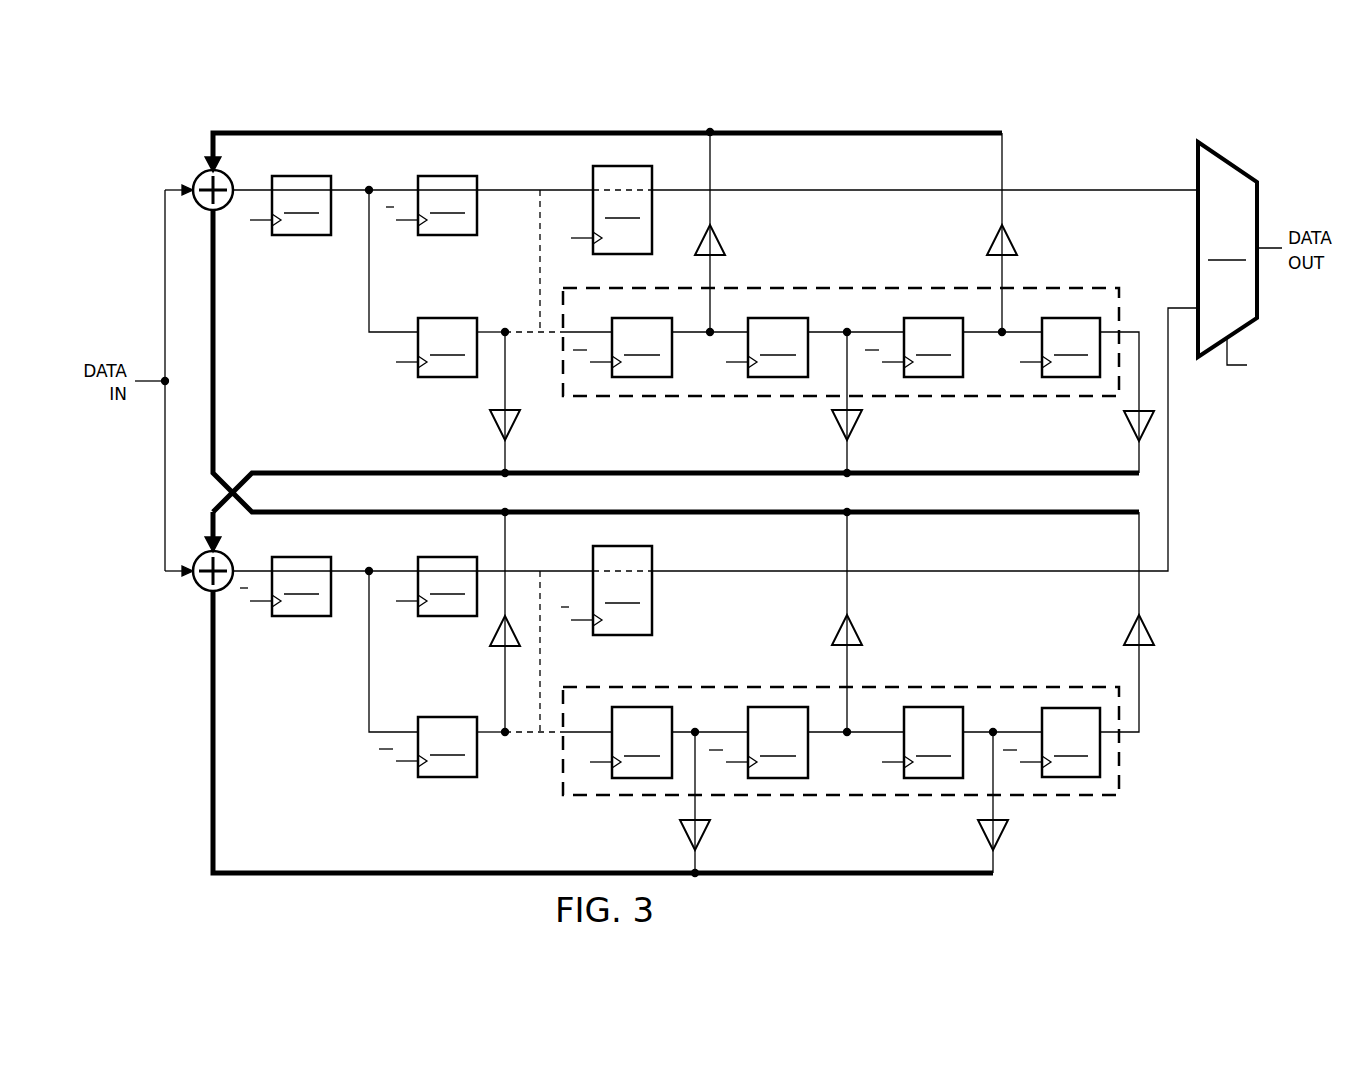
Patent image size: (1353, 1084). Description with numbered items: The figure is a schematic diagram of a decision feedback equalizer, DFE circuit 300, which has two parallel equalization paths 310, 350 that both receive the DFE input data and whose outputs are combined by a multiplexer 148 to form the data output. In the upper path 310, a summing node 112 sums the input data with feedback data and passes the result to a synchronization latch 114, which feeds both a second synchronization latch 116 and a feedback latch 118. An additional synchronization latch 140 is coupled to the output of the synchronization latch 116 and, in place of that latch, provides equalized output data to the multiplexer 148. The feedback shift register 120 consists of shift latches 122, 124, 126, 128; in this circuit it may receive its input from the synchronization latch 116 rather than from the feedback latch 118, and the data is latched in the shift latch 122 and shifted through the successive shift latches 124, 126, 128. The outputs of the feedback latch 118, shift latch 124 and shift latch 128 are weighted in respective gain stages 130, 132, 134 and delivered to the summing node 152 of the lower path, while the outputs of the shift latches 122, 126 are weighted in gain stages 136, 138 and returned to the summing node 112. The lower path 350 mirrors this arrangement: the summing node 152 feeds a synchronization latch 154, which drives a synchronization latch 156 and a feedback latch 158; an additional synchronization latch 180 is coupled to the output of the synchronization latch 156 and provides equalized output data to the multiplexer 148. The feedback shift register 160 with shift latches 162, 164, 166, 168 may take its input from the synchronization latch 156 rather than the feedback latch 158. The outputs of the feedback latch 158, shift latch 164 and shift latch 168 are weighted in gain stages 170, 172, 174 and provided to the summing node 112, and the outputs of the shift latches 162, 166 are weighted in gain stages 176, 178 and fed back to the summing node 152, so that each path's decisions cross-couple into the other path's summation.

The DFE circuit 300 is at (1109, 162).
The equalization path 310 is at (148, 247).
The equalization path 350 is at (152, 690).
The summing node 112 is at (199, 176).
The synchronization latch 114 is at (286, 205).
The synchronization latch 116 is at (431, 205).
The feedback latch 118 is at (428, 347).
The feedback shift register 120 is at (852, 281).
The shift latch 122 is at (622, 347).
The shift latch 124 is at (758, 347).
The shift latch 126 is at (914, 347).
The shift latch 128 is at (1051, 347).
The gain stage 130 is at (497, 424).
The gain stage 132 is at (838, 424).
The gain stage 134 is at (1130, 424).
The gain stage 136 is at (720, 241).
The gain stage 138 is at (1012, 241).
The synchronization latch 140 is at (607, 210).
The multiplexer 148 is at (1240, 259).
The summing node 152 is at (199, 586).
The synchronization latch 154 is at (285, 586).
The synchronization latch 156 is at (432, 586).
The feedback latch 158 is at (428, 747).
The feedback shift register 160 is at (1016, 678).
The shift latch 162 is at (622, 742).
The shift latch 164 is at (758, 742).
The shift latch 166 is at (914, 742).
The shift latch 168 is at (1051, 742).
The gain stage 170 is at (497, 629).
The gain stage 172 is at (857, 634).
The gain stage 174 is at (1149, 634).
The gain stage 176 is at (686, 835).
The gain stage 178 is at (1002, 835).
The synchronization latch 180 is at (606, 590).